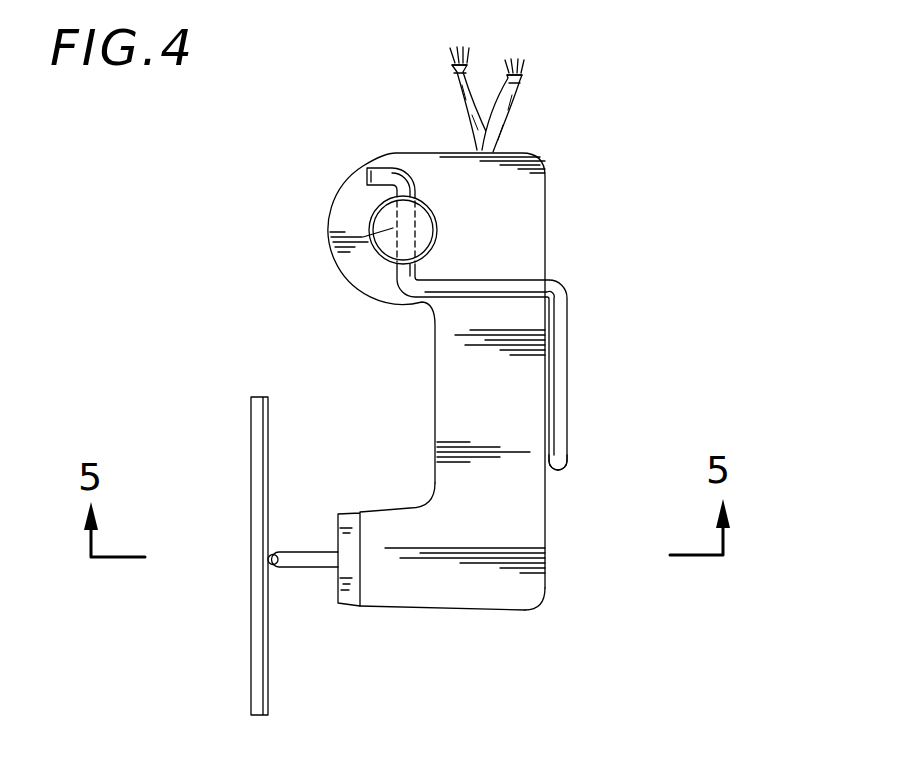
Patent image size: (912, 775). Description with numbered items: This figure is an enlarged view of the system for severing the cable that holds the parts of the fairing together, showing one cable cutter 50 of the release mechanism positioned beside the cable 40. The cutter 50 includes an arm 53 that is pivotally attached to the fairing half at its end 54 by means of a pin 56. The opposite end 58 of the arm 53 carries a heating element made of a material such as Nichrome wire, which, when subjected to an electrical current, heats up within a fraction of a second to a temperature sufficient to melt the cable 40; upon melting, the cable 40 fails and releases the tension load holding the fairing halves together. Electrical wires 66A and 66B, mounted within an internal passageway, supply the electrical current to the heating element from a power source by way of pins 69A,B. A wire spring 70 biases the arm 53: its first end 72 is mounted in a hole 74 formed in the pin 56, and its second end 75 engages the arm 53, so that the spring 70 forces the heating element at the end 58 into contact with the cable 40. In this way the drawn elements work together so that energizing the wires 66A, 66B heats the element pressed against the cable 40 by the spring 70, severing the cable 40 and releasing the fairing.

The cable 40 is at (251, 675).
The cable cutter 50 is at (625, 243).
The arm 53 is at (547, 565).
The end of arm 54 is at (357, 293).
The pin 56 is at (372, 207).
The opposite end of arm 58 is at (497, 617).
The electrical wire 66A is at (451, 78).
The electrical wire 66B is at (525, 90).
The pins 69A,B is at (320, 568).
The wire spring 70 is at (568, 390).
The first end of wire spring 72 is at (368, 177).
The hole 74 is at (363, 237).
The second end of wire spring 75 is at (557, 470).